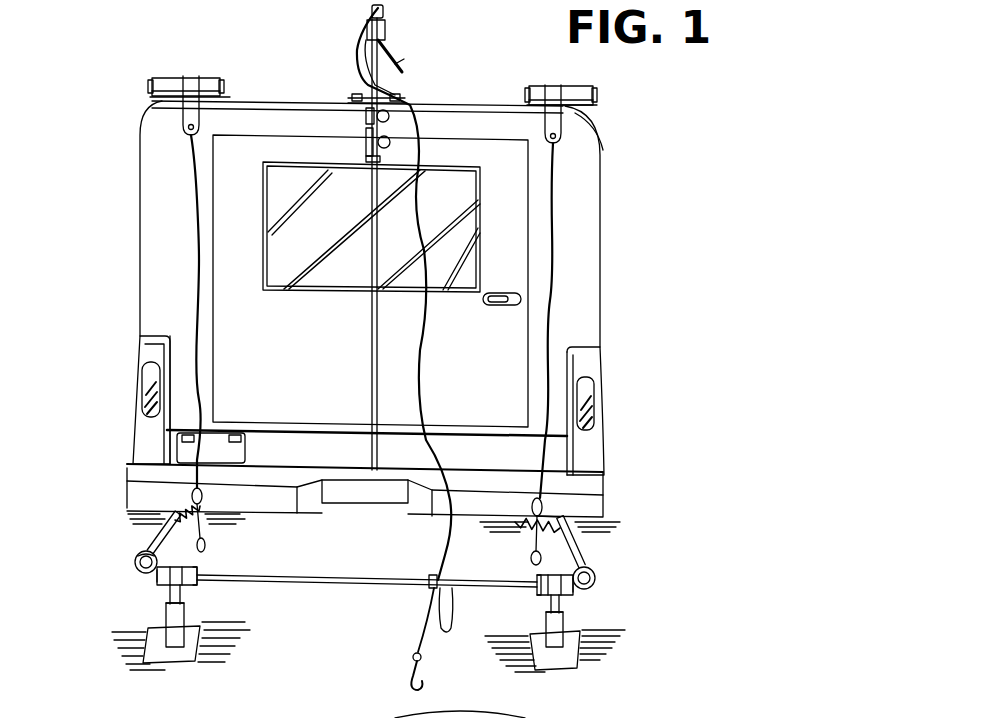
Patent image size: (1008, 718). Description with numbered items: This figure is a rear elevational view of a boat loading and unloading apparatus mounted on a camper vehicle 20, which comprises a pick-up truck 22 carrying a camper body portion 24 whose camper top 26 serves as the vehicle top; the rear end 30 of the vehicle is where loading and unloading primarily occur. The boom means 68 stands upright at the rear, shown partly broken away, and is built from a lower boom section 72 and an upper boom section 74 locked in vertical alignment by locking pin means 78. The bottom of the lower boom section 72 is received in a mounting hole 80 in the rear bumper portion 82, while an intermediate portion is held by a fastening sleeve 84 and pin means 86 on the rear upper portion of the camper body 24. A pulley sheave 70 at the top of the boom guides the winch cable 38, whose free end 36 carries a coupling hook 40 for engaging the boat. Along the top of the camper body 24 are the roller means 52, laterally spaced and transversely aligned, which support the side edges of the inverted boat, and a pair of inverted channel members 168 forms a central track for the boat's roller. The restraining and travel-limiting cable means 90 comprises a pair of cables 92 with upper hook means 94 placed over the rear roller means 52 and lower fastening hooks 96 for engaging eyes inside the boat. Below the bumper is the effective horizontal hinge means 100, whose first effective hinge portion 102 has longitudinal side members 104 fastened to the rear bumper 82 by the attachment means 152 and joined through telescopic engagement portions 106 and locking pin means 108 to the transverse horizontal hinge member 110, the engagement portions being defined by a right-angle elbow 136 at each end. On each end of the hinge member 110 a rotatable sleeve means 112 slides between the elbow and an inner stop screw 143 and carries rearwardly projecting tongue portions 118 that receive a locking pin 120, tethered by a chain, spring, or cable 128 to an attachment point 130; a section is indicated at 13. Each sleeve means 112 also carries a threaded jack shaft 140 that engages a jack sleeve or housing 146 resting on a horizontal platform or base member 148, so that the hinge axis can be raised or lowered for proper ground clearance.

The section line for FIG. 13 is at (520, 580).
The camper 20 is at (663, 193).
The pick-up truck 22 is at (616, 419).
The camper body portion 24 is at (603, 283).
The camper top 26 is at (490, 68).
The rear end 30 is at (150, 305).
The free end 36 is at (428, 636).
The winch cable 38 is at (470, 375).
The coupling hook 40 is at (420, 680).
The roller means 52 is at (166, 76).
The boom means 68 is at (382, 96).
The pulley sheave 70 is at (386, 10).
The lower boom section 72 is at (372, 336).
The upper boom section 74 is at (397, 59).
The locking pin means 78 is at (395, 155).
The mounting hole 80 is at (372, 472).
The rear bumper portion 82 is at (272, 480).
The fastening sleeve 84 is at (368, 119).
The pin means 86 is at (392, 121).
The restraining and travel-limiting cable means 90 is at (199, 222).
The cables 92 is at (198, 262).
The upper hook means 94 is at (183, 100).
The lower fastening hook 96 is at (205, 545).
The effective horizontal hinge means 100 is at (616, 613).
The first effective hinge portion 102 is at (601, 548).
The longitudinal side members 104 is at (165, 522).
The telescopic engagement portions 106 is at (147, 543).
The locking pin means 108 is at (135, 558).
The transverse horizontal axis or hinge member portion 110 is at (388, 557).
The rotatable sleeve means 112 is at (160, 588).
The tongue portions 118 is at (167, 593).
The locking pin 120 is at (192, 607).
The chain, spring, or cable 128 is at (190, 594).
The attachment point 130 is at (196, 567).
The right-angle elbow 136 is at (140, 570).
The jack shaft 140 is at (433, 610).
The inner stop screw or projection 143 is at (203, 568).
The jack sleeve or housing 146 is at (150, 628).
The horizontal platform or base member 148 is at (157, 660).
The attachment means 152 is at (137, 513).
The inverted channel members 168 is at (367, 93).